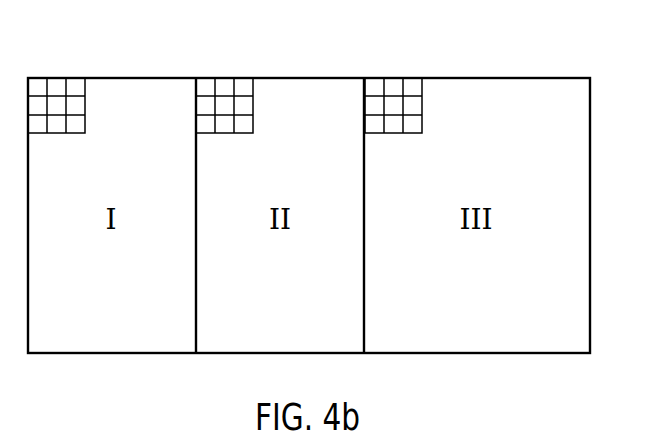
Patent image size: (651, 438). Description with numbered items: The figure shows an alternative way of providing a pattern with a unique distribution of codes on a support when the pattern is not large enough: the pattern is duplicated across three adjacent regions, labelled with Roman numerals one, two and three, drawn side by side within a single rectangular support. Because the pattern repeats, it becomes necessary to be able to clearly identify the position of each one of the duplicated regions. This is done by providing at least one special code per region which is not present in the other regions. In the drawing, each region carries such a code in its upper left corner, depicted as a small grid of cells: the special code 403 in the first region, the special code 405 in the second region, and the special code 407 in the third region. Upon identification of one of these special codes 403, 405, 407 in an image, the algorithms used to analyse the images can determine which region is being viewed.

The special code 403 is at (57, 103).
The special code 405 is at (225, 103).
The special code 407 is at (393, 103).